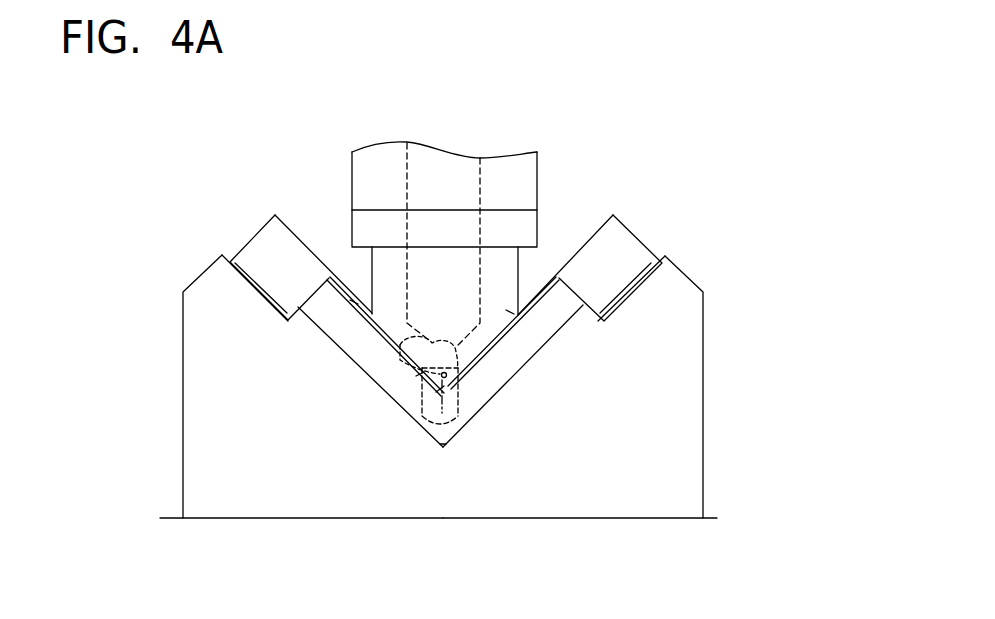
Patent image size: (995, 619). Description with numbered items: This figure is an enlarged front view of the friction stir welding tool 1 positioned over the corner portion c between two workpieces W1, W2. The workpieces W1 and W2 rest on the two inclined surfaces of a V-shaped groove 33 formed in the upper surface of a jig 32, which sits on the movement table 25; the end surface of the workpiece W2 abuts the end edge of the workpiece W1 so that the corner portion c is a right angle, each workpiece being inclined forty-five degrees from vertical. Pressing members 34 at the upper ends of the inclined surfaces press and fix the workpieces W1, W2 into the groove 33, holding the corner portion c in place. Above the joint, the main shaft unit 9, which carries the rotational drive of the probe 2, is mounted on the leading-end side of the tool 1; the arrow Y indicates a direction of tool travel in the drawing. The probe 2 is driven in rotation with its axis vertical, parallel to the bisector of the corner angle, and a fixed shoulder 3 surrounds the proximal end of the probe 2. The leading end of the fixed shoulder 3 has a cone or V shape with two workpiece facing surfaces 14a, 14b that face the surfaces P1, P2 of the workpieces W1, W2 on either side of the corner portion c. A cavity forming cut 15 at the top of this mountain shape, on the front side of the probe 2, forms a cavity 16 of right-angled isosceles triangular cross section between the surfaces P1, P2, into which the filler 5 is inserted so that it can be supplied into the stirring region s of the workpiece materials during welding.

The friction stir welding tool 1 is at (370, 271).
The probe 2 is at (440, 388).
The fixed shoulder 3 is at (389, 318).
The filler 5 is at (420, 337).
The main shaft unit 9 is at (537, 156).
The workpiece facing surface 14a is at (430, 356).
The workpiece facing surface 14b is at (456, 356).
The cavity forming cut 15 is at (455, 340).
The cavity 16 is at (460, 375).
The movement table 25 is at (677, 518).
The jig 32 is at (210, 518).
The V-shaped groove 33 is at (450, 437).
The pressing member 34 is at (250, 240).
The workpiece W1 is at (323, 315).
The workpiece W2 is at (553, 323).
The surface of workpiece P1 is at (354, 302).
The surface of workpiece P2 is at (510, 313).
The corner portion c is at (422, 372).
The stirring region s is at (441, 413).
The Y direction Y is at (413, 132).